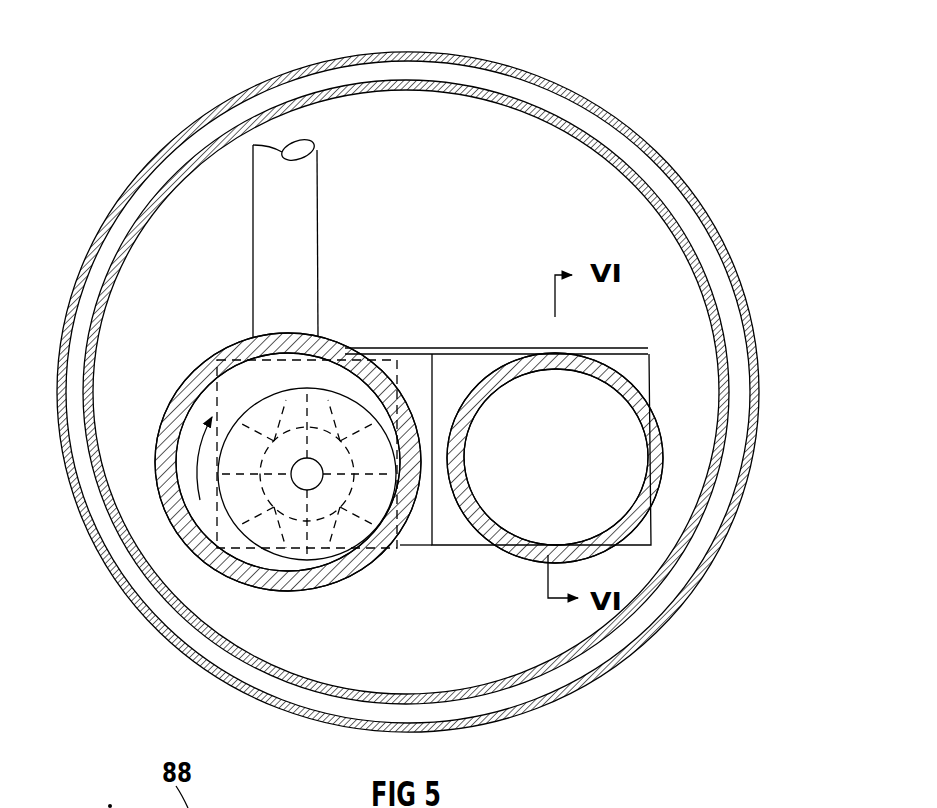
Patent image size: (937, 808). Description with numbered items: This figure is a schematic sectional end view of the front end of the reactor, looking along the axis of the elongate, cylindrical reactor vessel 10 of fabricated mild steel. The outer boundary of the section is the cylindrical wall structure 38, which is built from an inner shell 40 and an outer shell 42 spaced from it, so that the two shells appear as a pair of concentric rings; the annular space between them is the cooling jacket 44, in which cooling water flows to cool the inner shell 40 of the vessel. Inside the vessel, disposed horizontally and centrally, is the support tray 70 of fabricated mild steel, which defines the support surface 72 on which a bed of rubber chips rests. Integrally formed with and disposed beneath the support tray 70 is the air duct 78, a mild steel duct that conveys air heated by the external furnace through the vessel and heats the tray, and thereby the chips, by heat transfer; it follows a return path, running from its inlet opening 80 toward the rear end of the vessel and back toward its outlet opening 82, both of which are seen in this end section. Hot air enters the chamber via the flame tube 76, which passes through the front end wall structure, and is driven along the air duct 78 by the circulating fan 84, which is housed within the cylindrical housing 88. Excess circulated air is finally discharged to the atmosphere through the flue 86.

The reactor vessel 10 is at (726, 166).
The cylindrical wall structure 38 is at (578, 92).
The inner shell 40 is at (643, 173).
The outer shell 42 is at (612, 118).
The cooling jacket 44 is at (212, 132).
The support tray 70 is at (530, 348).
The support surface 72 is at (452, 346).
The flame tube 76 is at (665, 463).
The air duct 78 is at (650, 378).
The inlet opening 80 is at (627, 370).
The outlet opening 82 is at (418, 524).
The circulating fan 84 is at (328, 393).
The flue 86 is at (290, 213).
The cylindrical housing 88 is at (205, 372).